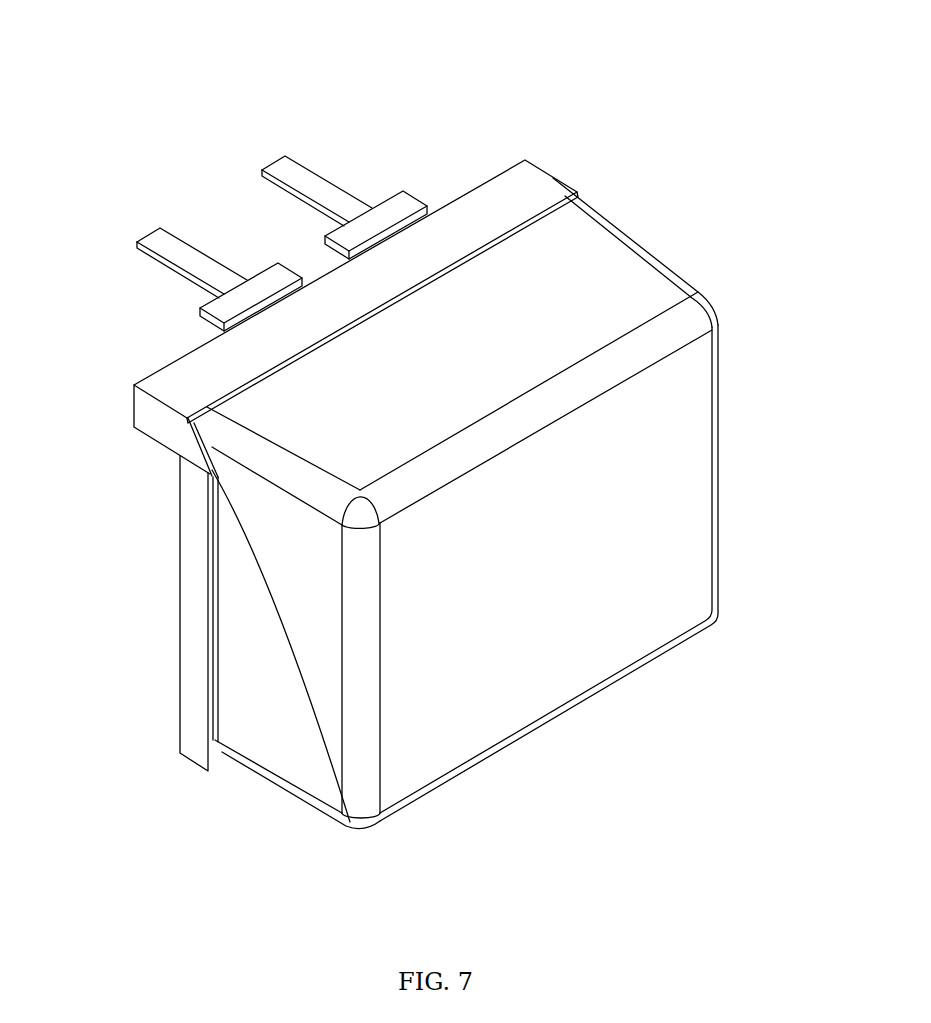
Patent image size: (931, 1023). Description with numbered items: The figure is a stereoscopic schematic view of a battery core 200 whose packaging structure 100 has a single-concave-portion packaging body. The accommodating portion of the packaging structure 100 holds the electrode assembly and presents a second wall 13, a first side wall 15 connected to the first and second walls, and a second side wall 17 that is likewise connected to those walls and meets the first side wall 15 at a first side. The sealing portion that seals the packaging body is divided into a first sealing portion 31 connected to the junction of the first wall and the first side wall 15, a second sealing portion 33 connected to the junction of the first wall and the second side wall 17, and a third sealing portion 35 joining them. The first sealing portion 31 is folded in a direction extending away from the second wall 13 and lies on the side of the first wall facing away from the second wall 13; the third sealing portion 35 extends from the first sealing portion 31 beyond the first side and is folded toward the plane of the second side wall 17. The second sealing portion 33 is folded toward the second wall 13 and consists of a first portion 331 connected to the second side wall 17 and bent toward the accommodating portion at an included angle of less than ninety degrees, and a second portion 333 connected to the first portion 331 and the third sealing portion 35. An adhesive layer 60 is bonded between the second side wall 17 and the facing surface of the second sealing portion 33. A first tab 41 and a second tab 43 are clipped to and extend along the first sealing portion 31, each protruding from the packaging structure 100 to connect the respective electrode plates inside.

The battery core 200 is at (478, 40).
The packaging structure 100 is at (695, 222).
The second wall 13 is at (683, 568).
The first side wall 15 is at (613, 278).
The second side wall 17 is at (243, 618).
The first sealing portion 31 is at (478, 217).
The third sealing portion 35 is at (152, 425).
The first tab 41 is at (273, 158).
The second tab 43 is at (157, 230).
The second sealing portion 33 is at (387, 866).
The first portion 331 is at (197, 662).
The second portion 333 is at (350, 831).
The adhesive layer 60 is at (233, 762).